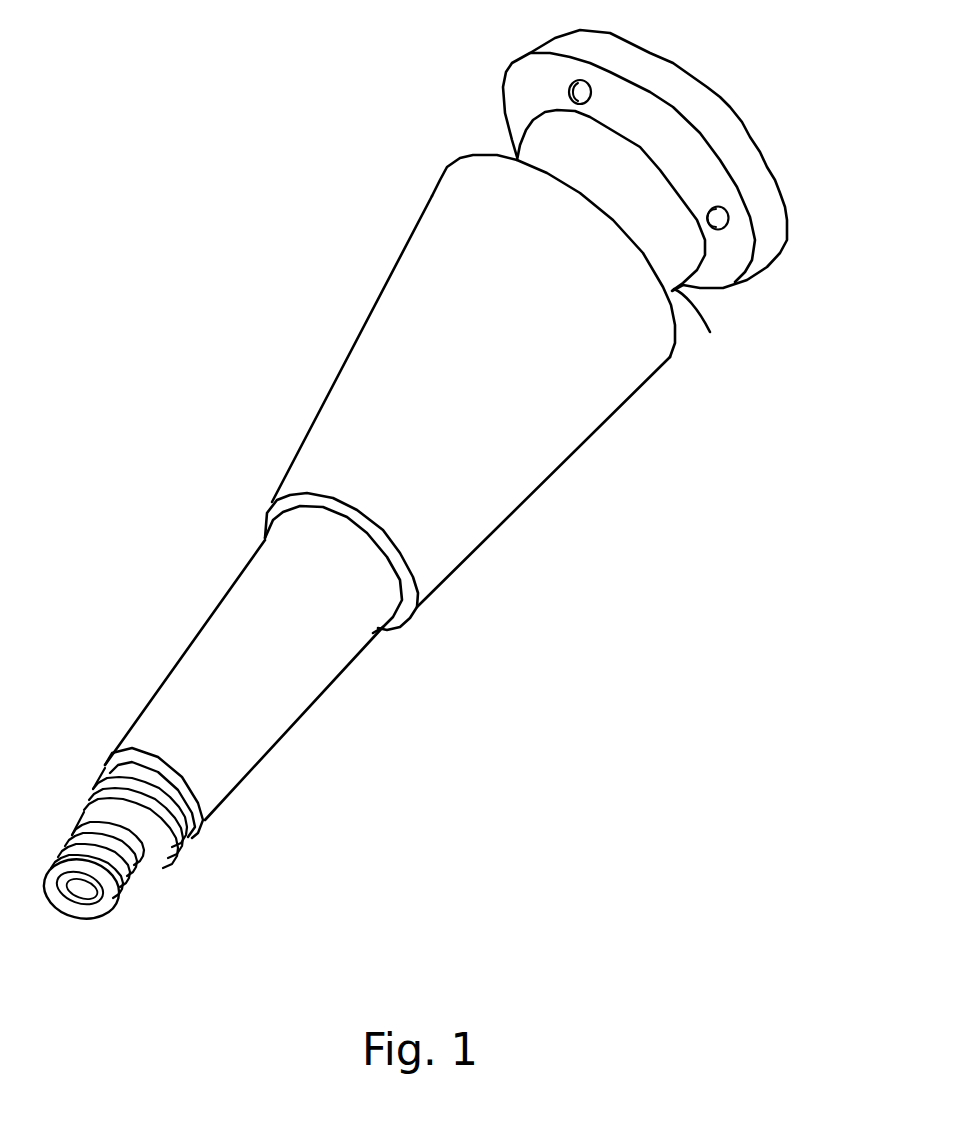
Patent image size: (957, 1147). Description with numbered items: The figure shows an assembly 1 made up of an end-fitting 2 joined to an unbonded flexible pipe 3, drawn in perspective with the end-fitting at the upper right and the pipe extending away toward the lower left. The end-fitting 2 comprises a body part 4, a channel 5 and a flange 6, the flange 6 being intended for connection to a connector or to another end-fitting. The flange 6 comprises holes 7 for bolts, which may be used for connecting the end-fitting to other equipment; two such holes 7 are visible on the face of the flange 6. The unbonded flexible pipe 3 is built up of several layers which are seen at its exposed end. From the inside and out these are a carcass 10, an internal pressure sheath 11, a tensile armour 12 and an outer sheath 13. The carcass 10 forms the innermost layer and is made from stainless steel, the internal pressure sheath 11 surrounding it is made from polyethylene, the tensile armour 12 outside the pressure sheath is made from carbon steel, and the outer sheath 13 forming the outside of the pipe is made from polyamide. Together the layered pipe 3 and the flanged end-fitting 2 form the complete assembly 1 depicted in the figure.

The assembly 1 is at (605, 527).
The end-fitting 2 is at (370, 308).
The unbonded flexible pipe 3 is at (368, 643).
The body part 4 is at (637, 390).
The channel 5 is at (690, 300).
The flange 6 is at (788, 223).
The holes 7 is at (718, 213).
The carcass 10 is at (113, 917).
The internal pressure sheath 11 is at (150, 880).
The tensile armour 12 is at (188, 842).
The outer sheath 13 is at (345, 703).